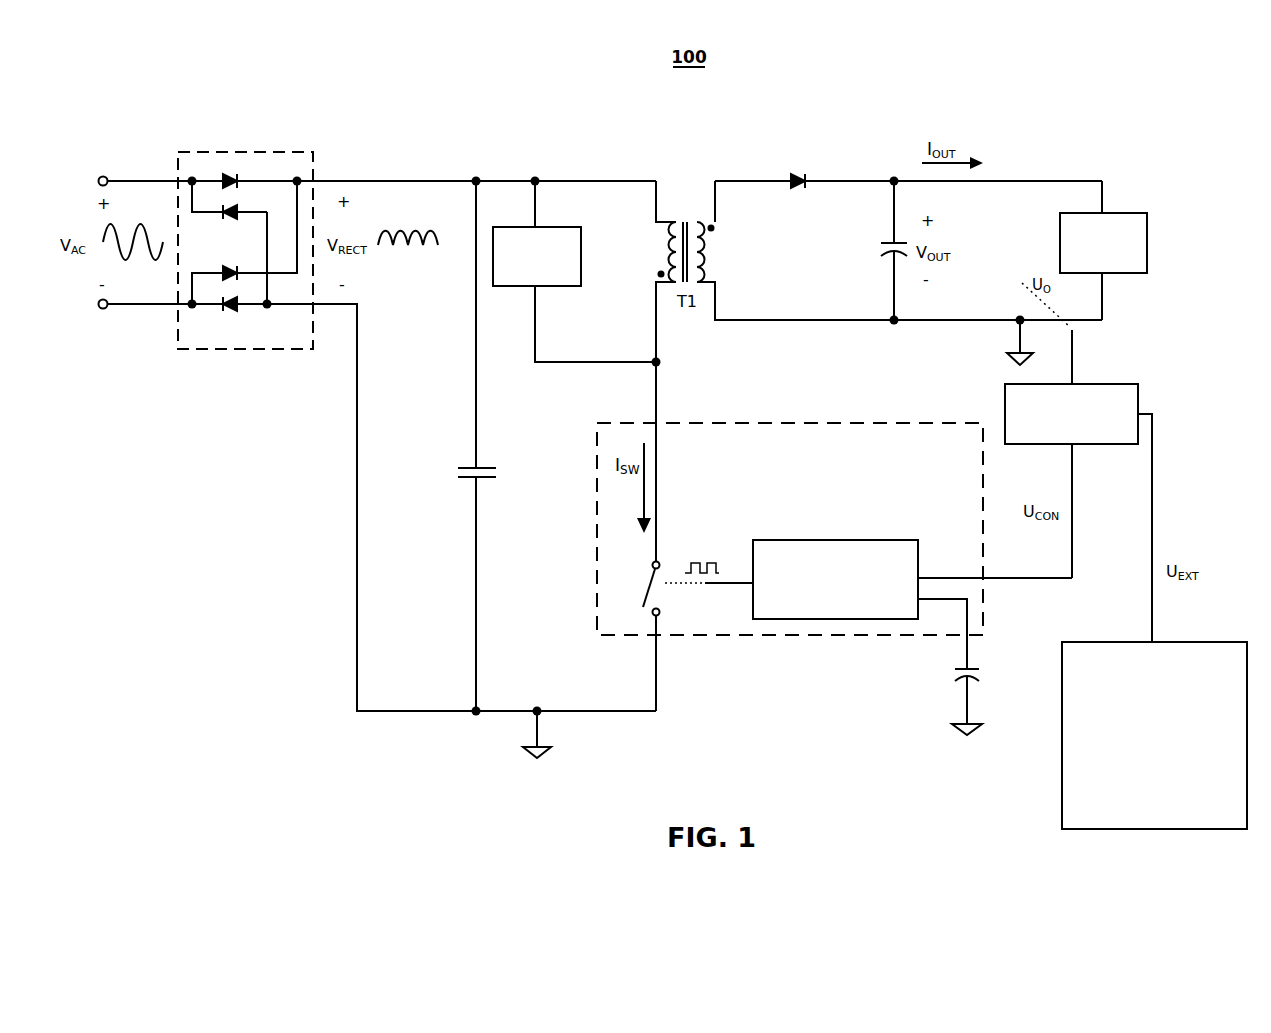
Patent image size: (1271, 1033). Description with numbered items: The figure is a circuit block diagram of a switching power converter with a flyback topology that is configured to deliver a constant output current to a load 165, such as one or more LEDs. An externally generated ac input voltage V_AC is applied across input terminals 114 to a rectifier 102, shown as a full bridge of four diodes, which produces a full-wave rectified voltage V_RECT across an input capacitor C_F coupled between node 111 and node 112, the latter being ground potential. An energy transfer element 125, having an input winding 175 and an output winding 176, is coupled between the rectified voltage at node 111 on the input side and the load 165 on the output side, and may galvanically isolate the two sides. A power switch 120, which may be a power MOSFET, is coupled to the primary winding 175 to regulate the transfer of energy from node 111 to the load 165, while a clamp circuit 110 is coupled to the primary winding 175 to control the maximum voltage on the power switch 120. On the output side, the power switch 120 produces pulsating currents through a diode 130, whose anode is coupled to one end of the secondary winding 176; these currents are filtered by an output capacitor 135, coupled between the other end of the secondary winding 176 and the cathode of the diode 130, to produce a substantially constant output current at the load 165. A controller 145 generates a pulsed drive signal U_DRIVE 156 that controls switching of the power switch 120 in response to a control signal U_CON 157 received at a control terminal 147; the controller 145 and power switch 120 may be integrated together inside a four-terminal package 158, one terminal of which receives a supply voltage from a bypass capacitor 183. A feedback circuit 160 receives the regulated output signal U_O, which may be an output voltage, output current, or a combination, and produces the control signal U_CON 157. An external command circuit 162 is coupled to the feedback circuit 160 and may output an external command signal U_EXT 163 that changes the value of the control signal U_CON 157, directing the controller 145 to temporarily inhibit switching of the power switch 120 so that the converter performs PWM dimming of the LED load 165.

The rectifier 102 is at (250, 352).
The clamp circuit 110 is at (511, 290).
The node 111 is at (490, 175).
The node 112 is at (477, 716).
The input terminals 114 is at (110, 175).
The power switch 120 is at (668, 565).
The energy transfer element 125 is at (685, 217).
The diode 130 is at (792, 188).
The output capacitor 135 is at (878, 252).
The controller 145 is at (795, 538).
The control terminal 147 is at (988, 576).
The drive signal U_DRIVE 156 is at (706, 607).
The control signal U_CON 157 is at (1048, 490).
The package 158 is at (793, 637).
The feedback circuit 160 is at (1132, 378).
The external command circuit 162 is at (1049, 751).
The external command signal U_EXT 163 is at (1190, 563).
The load 165 is at (1153, 206).
The input winding 175 is at (669, 241).
The output winding 176 is at (705, 240).
The bypass capacitor 183 is at (958, 672).